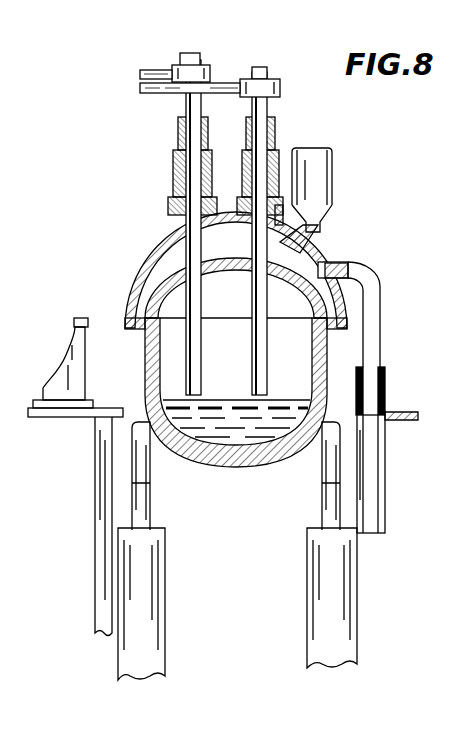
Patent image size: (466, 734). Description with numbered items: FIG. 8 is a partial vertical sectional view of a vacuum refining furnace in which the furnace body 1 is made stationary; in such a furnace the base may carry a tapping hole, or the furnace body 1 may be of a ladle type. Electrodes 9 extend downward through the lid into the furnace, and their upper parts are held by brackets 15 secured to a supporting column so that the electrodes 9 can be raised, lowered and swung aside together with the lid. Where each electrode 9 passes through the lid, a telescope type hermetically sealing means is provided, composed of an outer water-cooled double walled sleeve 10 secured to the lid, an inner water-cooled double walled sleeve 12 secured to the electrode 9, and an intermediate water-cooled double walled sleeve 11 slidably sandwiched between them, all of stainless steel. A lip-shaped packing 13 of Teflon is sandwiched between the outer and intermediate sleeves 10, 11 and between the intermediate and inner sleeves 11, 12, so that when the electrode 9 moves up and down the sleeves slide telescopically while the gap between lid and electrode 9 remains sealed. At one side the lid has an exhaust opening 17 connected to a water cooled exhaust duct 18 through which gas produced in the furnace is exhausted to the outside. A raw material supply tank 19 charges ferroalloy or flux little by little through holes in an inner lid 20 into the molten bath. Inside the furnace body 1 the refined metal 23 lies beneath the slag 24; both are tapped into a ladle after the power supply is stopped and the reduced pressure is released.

The furnace body 1 is at (330, 385).
The electrode 9 is at (254, 67).
The outer water-cooled double walled sleeve 10 is at (320, 235).
The intermediate water-cooled double walled sleeve 11 is at (280, 180).
The inner water-cooled double walled sleeve 12 is at (273, 118).
The lip-shaped packing 13 is at (283, 133).
The bracket 15 is at (147, 78).
The exhaust opening 17 is at (350, 265).
The water cooled exhaust duct 18 is at (378, 320).
The raw material supply tank 19 is at (327, 170).
The inner lid 20 is at (365, 275).
The refined metal 23 is at (218, 440).
The slag 24 is at (254, 420).